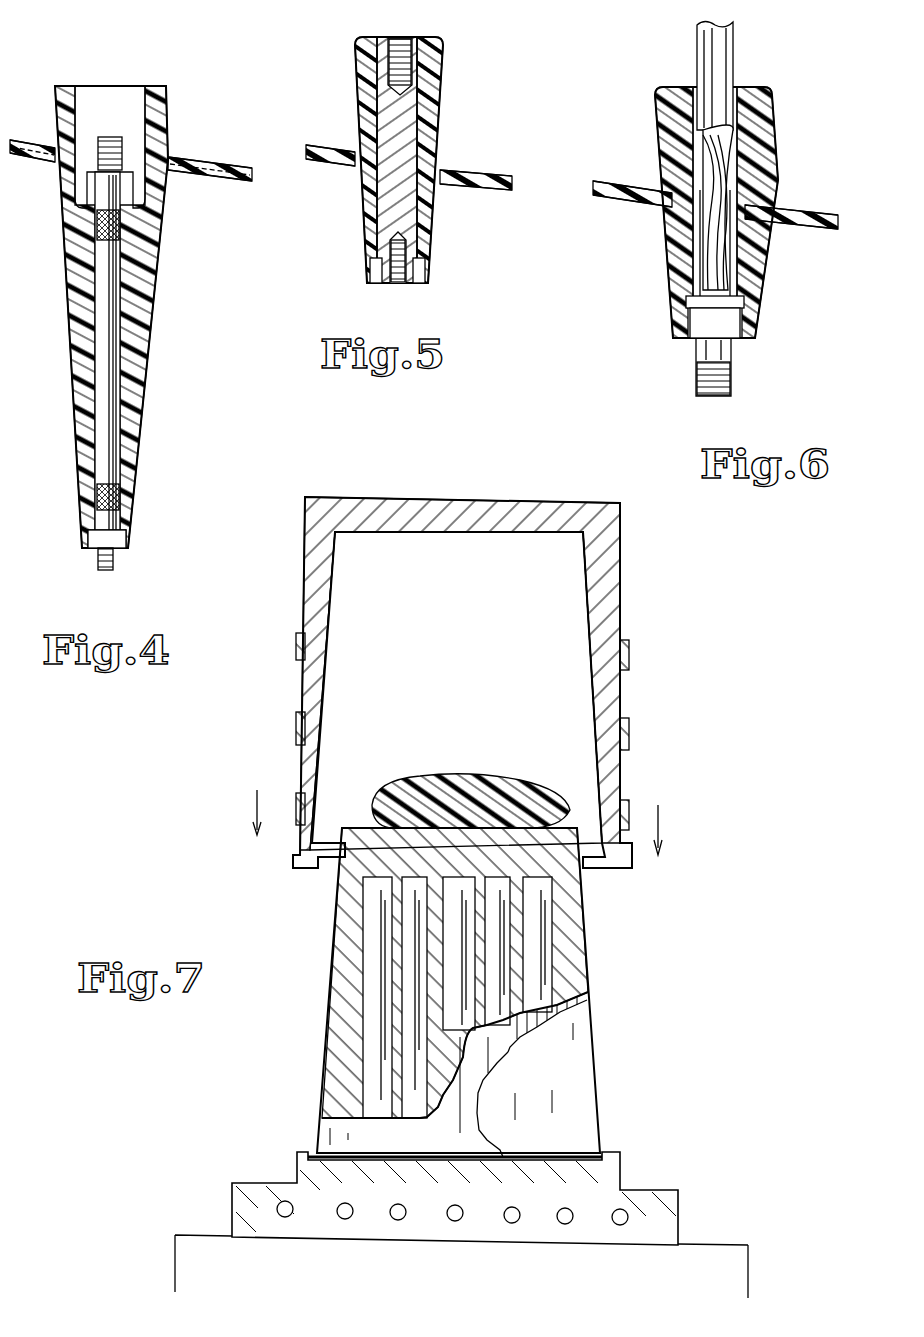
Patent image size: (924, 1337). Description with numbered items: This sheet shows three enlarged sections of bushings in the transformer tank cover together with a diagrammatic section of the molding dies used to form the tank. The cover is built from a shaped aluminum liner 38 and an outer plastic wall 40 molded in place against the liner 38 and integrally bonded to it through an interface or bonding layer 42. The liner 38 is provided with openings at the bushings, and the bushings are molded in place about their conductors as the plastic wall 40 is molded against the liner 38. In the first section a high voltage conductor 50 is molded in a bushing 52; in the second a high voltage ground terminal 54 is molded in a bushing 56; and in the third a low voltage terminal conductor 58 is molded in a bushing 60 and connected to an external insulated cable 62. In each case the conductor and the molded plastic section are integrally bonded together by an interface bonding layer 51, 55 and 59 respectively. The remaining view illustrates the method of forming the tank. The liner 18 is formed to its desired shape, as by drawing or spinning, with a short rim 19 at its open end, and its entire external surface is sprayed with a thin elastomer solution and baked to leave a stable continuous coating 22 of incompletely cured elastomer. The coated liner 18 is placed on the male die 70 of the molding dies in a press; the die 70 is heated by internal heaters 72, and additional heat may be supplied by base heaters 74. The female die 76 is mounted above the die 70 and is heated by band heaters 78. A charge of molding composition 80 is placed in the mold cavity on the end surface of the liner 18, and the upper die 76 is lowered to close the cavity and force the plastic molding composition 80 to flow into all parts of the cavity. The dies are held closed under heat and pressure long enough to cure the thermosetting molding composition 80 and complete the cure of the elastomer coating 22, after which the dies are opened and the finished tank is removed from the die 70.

In FIG. 4, the aluminum liner 38 is at (210, 178).
In FIG. 4, the outer plastic wall 40 is at (183, 160).
In FIG. 4, the interface or bonding layer 42 is at (252, 172).
In FIG. 4, the high voltage conductor 50 is at (108, 420).
In FIG. 4, the interface bonding layer 51 is at (120, 470).
In FIG. 4, the bushing 52 is at (160, 270).
In FIG. 5, the high voltage ground terminal 54 is at (405, 135).
In FIG. 5, the interface bonding layer 55 is at (420, 200).
In FIG. 5, the bushing 56 is at (435, 94).
In FIG. 6, the low voltage terminal conductor 58 is at (700, 300).
In FIG. 6, the interface bonding layer 59 is at (740, 278).
In FIG. 6, the bushing 60 is at (672, 240).
In FIG. 6, the external insulated cable 62 is at (710, 55).
In FIG. 7, the male die 70 is at (578, 950).
In FIG. 7, the internal heaters 72 is at (372, 997).
In FIG. 7, the base heaters 74 is at (400, 1221).
In FIG. 7, the female die 76 is at (610, 585).
In FIG. 7, the band heaters 78 is at (632, 655).
In FIG. 7, the molding composition 80 is at (445, 800).
In FIG. 7, the liner 18 is at (588, 962).
In FIG. 7, the coating of incompletely cured elastomer 22 is at (575, 1080).
In FIG. 7, the short rim 19 is at (605, 1160).